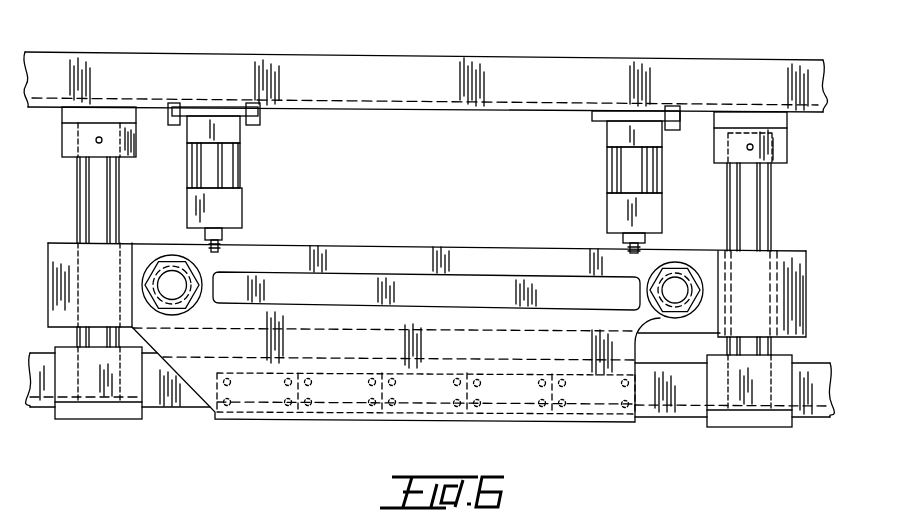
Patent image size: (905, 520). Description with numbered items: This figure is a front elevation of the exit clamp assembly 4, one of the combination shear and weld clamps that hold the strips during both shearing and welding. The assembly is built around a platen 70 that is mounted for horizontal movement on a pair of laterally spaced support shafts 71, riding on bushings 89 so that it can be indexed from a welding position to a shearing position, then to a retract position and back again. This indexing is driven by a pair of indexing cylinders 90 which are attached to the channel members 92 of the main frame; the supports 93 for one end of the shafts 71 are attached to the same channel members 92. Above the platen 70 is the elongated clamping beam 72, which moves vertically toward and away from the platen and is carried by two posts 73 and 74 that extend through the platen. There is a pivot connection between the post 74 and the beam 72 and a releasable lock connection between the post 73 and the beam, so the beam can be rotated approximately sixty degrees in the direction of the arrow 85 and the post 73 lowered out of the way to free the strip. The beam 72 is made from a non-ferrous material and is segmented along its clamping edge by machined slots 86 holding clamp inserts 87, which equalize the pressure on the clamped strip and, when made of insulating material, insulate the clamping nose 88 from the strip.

The exit clamp assembly 4 is at (224, 424).
The platen 70 is at (682, 331).
The support shafts 71 is at (85, 176).
The clamping beam 72 is at (348, 257).
The post 73 is at (672, 283).
The post 74 is at (170, 282).
The arrow 85 is at (706, 251).
The machined slots 86 is at (577, 373).
The clamp inserts 87 is at (585, 397).
The clamping nose 88 is at (413, 398).
The bushings 89 is at (778, 262).
The indexing cylinders 90 is at (620, 172).
The channel members 92 is at (229, 63).
The supports 93 is at (132, 143).